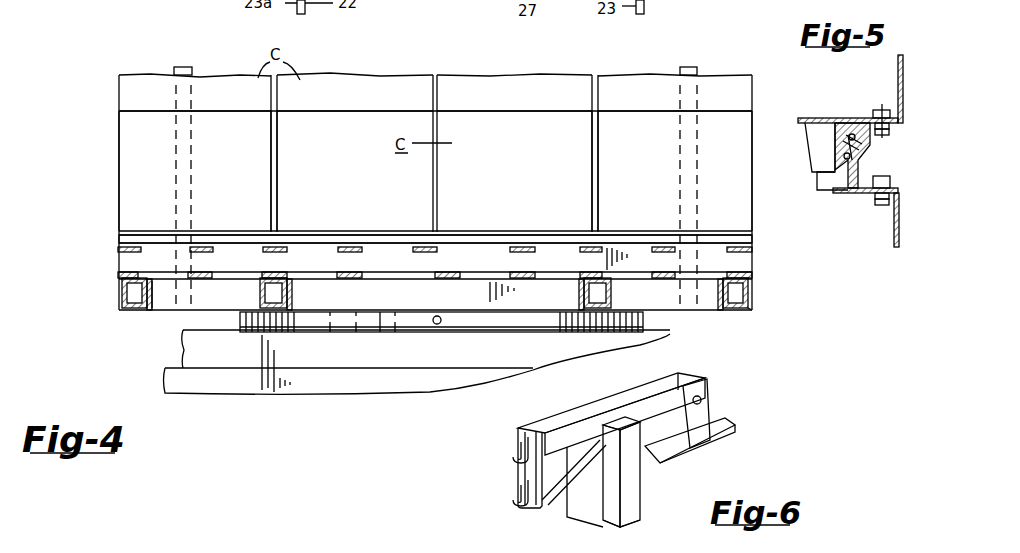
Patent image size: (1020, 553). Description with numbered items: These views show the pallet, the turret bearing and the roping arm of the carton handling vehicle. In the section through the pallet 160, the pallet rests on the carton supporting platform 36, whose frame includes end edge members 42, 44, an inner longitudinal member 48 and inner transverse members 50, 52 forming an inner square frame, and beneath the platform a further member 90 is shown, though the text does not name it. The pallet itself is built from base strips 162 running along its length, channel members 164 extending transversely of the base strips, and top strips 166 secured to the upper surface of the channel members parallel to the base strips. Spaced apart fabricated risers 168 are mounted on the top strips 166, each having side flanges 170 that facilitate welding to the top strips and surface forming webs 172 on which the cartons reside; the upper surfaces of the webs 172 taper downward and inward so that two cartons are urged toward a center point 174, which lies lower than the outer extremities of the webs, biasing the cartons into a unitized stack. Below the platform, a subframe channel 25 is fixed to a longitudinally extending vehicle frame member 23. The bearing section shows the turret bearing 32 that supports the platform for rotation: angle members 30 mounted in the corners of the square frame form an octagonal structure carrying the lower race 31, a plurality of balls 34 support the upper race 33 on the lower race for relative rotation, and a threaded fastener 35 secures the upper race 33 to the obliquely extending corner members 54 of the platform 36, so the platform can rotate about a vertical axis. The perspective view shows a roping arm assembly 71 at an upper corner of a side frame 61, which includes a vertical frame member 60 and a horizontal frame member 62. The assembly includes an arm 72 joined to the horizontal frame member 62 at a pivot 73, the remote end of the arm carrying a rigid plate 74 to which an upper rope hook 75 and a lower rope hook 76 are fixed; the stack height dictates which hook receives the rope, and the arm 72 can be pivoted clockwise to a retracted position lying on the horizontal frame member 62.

In FIG. 4, the pallet 160 is at (495, 228).
In FIG. 4, the top strips 166 is at (264, 254).
In FIG. 4, the base strips 162 is at (358, 294).
In FIG. 4, the end edge member 42 is at (121, 292).
In FIG. 4, the inner longitudinal member 48 is at (162, 300).
In FIG. 4, the inner transverse member 50 is at (259, 294).
In FIG. 4, the inner transverse member 52 is at (612, 296).
In FIG. 4, the end edge member 44 is at (753, 296).
In FIG. 4, the carton supporting platform 36 is at (740, 315).
In FIG. 5, the carton supporting platform 36 is at (888, 72).
In FIG. 4, the vertical frame member 60 is at (697, 72).
In FIG. 6, the vertical frame member 60 is at (633, 516).
In FIG. 4, the web 172 is at (146, 222).
In FIG. 4, the center point 174 is at (269, 225).
In FIG. 4, the riser 168 is at (230, 236).
In FIG. 4, the channel member 164 is at (435, 165).
In FIG. 4, the side flange 170 is at (434, 164).
In FIG. 4, the rack 90 is at (395, 318).
In FIG. 4, the subframe channel 25 is at (192, 352).
In FIG. 4, the longitudinally extending member 23 is at (240, 383).
In FIG. 5, the upper race 33 is at (820, 125).
In FIG. 5, the corner member 54 is at (840, 118).
In FIG. 5, the ball 34 is at (862, 152).
In FIG. 5, the threaded fastener 35 is at (880, 108).
In FIG. 5, the bearing 32 is at (824, 200).
In FIG. 5, the lower race 31 is at (861, 195).
In FIG. 5, the angle member 30 is at (892, 236).
In FIG. 6, the arm 72 is at (575, 418).
In FIG. 6, the roping arm assembly 71 is at (508, 432).
In FIG. 6, the upper rope hook 75 is at (512, 456).
In FIG. 6, the lower rope hook 76 is at (512, 502).
In FIG. 6, the rigid plate 74 is at (517, 478).
In FIG. 6, the side frame 61 is at (652, 494).
In FIG. 6, the pivot 73 is at (708, 394).
In FIG. 6, the horizontal frame member 62 is at (690, 452).